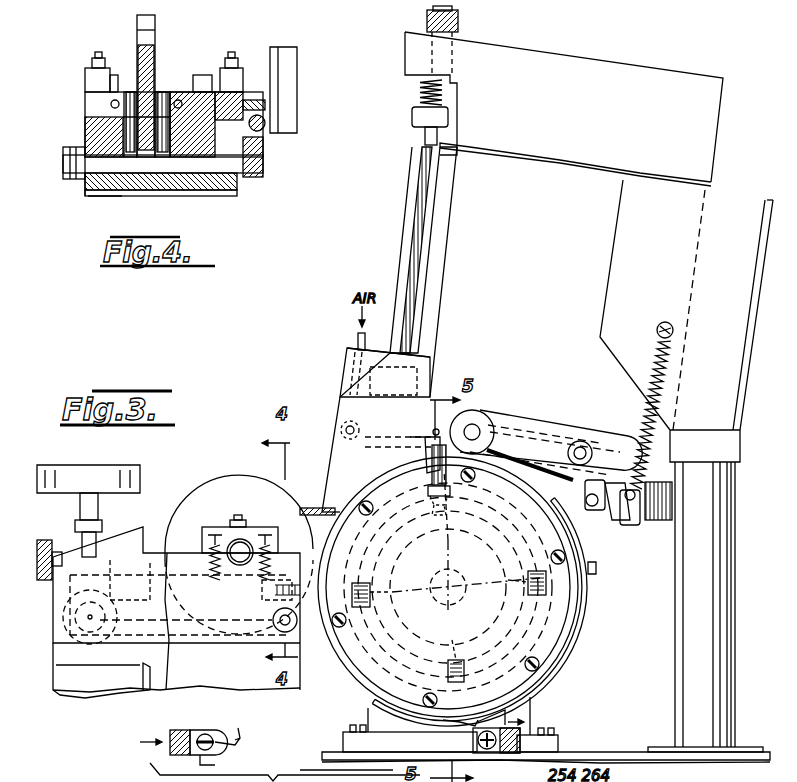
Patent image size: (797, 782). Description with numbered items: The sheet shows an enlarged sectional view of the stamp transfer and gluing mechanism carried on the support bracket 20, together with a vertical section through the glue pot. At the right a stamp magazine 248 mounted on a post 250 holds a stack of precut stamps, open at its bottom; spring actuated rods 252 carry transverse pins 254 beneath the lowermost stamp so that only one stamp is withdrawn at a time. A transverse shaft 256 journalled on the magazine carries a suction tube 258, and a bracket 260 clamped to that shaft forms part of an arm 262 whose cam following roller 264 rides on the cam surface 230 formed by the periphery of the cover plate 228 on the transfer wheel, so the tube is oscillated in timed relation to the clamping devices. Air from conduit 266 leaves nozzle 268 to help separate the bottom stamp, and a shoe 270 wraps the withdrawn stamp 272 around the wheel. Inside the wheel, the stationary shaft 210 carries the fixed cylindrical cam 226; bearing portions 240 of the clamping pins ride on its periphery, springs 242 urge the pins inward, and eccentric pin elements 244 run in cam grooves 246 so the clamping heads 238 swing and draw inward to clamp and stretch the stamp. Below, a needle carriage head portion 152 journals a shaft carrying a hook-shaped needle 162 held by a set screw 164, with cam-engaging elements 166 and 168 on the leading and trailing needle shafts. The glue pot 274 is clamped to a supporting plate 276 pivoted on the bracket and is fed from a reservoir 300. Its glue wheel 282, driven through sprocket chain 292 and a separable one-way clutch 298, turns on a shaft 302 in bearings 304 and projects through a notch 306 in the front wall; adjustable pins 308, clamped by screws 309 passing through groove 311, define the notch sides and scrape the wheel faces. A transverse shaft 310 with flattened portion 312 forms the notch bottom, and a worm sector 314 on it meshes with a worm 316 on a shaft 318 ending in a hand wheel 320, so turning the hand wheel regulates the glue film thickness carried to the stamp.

In FIG. 3, the support bracket 20 is at (752, 752).
In FIG. 3, the head portions 152 is at (545, 737).
In FIG. 3, the hook-shaped needles 162 is at (440, 737).
In FIG. 3, the set screws 164 is at (205, 730).
In FIG. 3, the cam-engaging element 166 is at (510, 716).
In FIG. 3, the cam-engaging element 168 is at (200, 758).
In FIG. 3, the stationary horizontal shaft 210 is at (460, 576).
In FIG. 3, the cylindrical cam 226 is at (434, 661).
In FIG. 3, the cover plate 228 is at (465, 512).
In FIG. 3, the cam surface 230 is at (570, 656).
In FIG. 3, the clamping heads 238 is at (272, 620).
In FIG. 3, the bearing portions 240 is at (453, 592).
In FIG. 3, the springs 242 is at (448, 587).
In FIG. 3, the pin elements 244 is at (448, 587).
In FIG. 3, the cam grooves 246 is at (459, 480).
In FIG. 3, the stamp magazine 248 is at (713, 152).
In FIG. 3, the post 250 is at (732, 518).
In FIG. 3, the spring actuated rods 252 is at (420, 165).
In FIG. 3, the transverse pins 254 is at (420, 462).
In FIG. 3, the transverse shaft 256 is at (632, 526).
In FIG. 3, the suction tube 258 is at (580, 441).
In FIG. 3, the bracket 260 is at (603, 522).
In FIG. 3, the arm 262 is at (545, 428).
In FIG. 3, the cam following roller 264 is at (485, 412).
In FIG. 3, the conduit 266 is at (356, 340).
In FIG. 3, the nozzle 268 is at (384, 440).
In FIG. 3, the shoe 270 is at (338, 445).
In FIG. 3, the stamp 272 is at (345, 688).
In FIG. 4, the glue pot 274 is at (96, 128).
In FIG. 3, the glue pot 274 is at (148, 550).
In FIG. 4, the supporting plate 276 is at (98, 198).
In FIG. 3, the supporting plate 276 is at (106, 665).
In FIG. 4, the glue wheel 282 is at (146, 32).
In FIG. 3, the glue wheel 282 is at (232, 485).
In FIG. 3, the sprocket chain 292 is at (306, 505).
In FIG. 4, the one-way clutch device 298 is at (285, 140).
In FIG. 3, the reservoir 300 is at (105, 470).
In FIG. 4, the shaft 302 is at (201, 75).
In FIG. 3, the shaft 302 is at (232, 542).
In FIG. 4, the bearings 304 is at (92, 78).
In FIG. 3, the bearings 304 is at (268, 535).
In FIG. 4, the notch 306 is at (131, 92).
In FIG. 4, the adjustable pins 308 is at (165, 143).
In FIG. 4, the screws 309 is at (112, 103).
In FIG. 4, the transverse shaft 310 is at (218, 160).
In FIG. 3, the transverse shaft 310 is at (282, 635).
In FIG. 4, the groove 311 is at (172, 92).
In FIG. 4, the flattened portion 312 is at (135, 197).
In FIG. 4, the worm sector 314 is at (262, 158).
In FIG. 3, the worm sector 314 is at (275, 592).
In FIG. 4, the worm 316 is at (265, 120).
In FIG. 3, the worm 316 is at (285, 563).
In FIG. 4, the shaft 318 is at (262, 112).
In FIG. 3, the shaft 318 is at (195, 551).
In FIG. 3, the hand wheel 320 is at (45, 540).